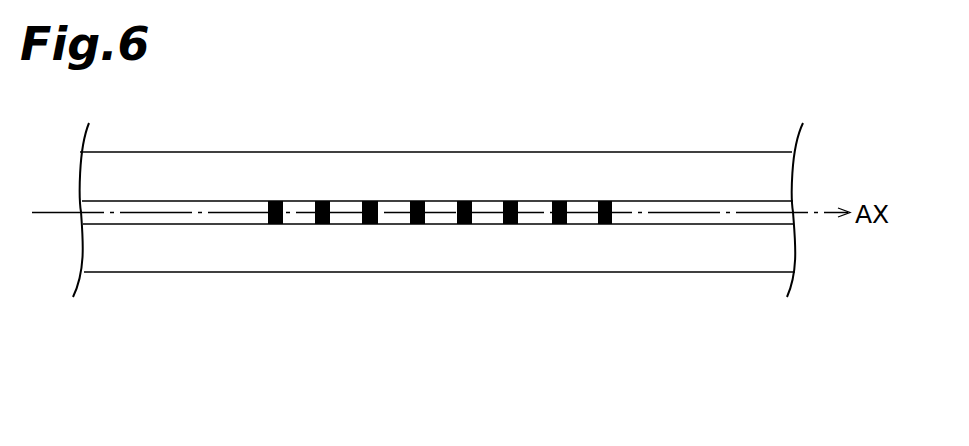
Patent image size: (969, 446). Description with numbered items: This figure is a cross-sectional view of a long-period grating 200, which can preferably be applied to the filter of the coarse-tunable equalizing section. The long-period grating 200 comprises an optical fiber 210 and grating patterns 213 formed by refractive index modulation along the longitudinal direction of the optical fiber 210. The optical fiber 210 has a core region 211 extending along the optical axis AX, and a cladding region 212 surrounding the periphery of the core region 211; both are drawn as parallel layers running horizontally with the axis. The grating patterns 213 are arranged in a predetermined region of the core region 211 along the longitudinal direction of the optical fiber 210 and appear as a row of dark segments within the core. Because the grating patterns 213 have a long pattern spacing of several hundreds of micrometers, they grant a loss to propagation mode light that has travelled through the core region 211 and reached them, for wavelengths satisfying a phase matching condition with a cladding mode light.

The long-period grating 200 is at (563, 152).
The optical fiber 210 is at (193, 342).
The core region 211 is at (115, 217).
The cladding region 212 is at (165, 255).
The grating patterns 213 is at (400, 227).